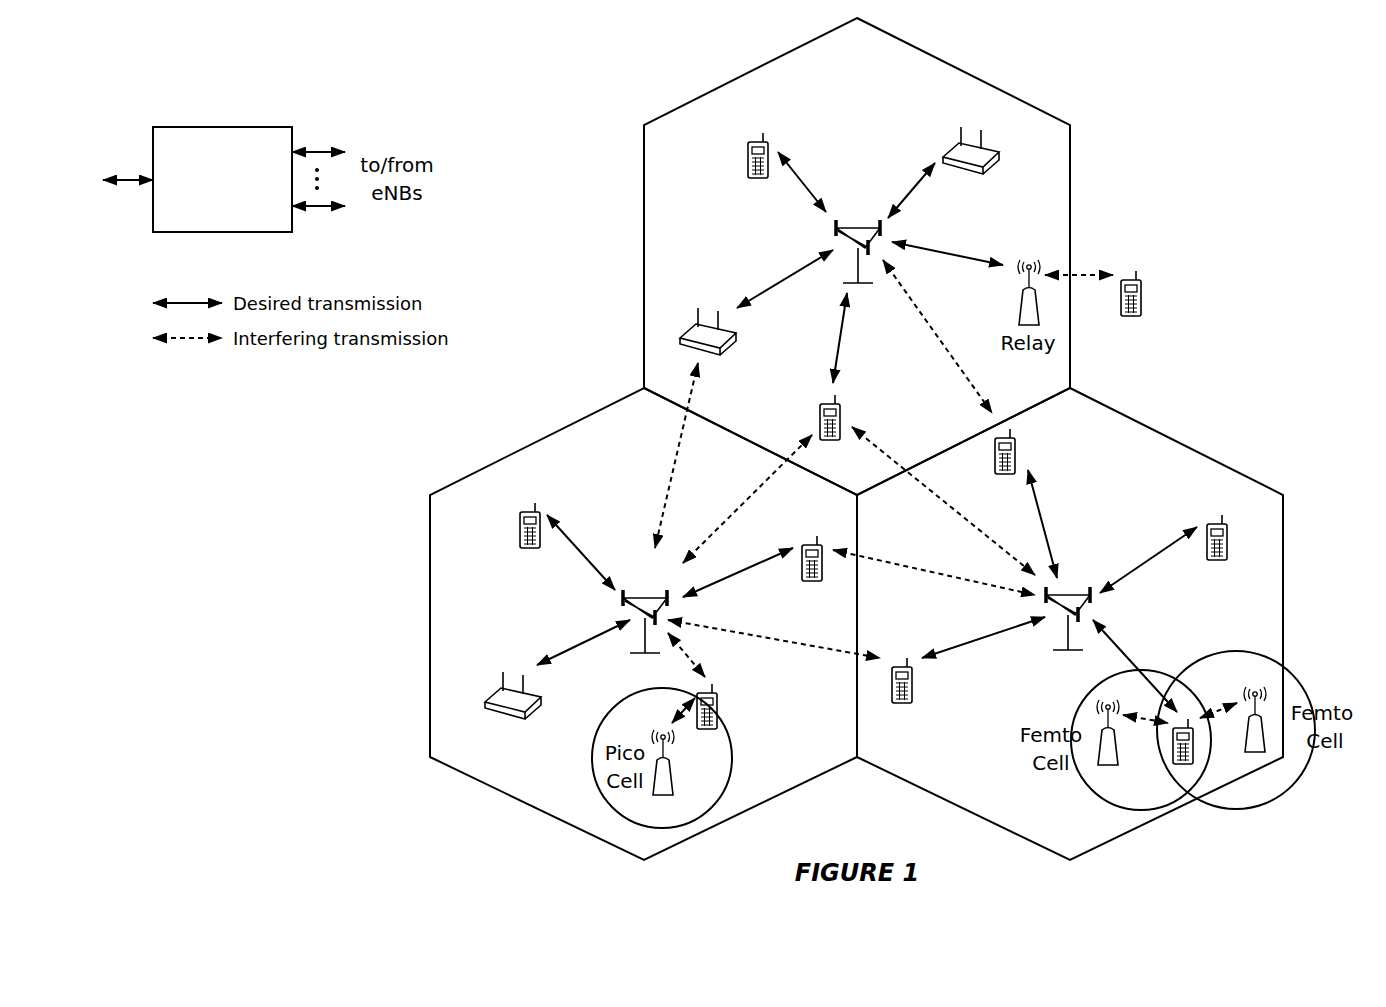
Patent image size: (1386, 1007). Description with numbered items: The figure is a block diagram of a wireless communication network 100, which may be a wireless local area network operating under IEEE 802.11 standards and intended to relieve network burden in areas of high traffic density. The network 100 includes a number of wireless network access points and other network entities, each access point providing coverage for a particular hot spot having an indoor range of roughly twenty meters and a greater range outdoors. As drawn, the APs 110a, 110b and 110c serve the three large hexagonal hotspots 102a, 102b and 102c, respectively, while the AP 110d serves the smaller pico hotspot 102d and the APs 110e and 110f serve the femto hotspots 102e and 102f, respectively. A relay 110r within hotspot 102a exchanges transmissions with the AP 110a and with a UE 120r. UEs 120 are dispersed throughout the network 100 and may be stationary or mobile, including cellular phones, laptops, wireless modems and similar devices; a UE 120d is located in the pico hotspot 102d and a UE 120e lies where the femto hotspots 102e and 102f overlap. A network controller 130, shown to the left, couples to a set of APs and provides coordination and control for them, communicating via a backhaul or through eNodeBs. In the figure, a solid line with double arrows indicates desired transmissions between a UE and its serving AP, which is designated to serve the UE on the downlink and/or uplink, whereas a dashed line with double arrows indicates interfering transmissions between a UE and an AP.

The wireless communication network 100 is at (1215, 85).
The hotspot 102a is at (962, 68).
The hotspot 102b is at (559, 432).
The hotspot 102c is at (1163, 436).
The hotspot 102d is at (614, 705).
The hotspot 102e is at (1077, 703).
The hotspot 102f is at (1234, 650).
The AP 110a is at (861, 226).
The AP 110b is at (650, 594).
The AP 110c is at (1066, 592).
The AP 110d is at (672, 783).
The AP 110e is at (1118, 755).
The AP 110f is at (1264, 742).
The relay 110r is at (1017, 307).
The UE 120 is at (747, 152).
The UE 120d is at (719, 705).
The UE 120e is at (1173, 762).
The UE 120r is at (1141, 310).
The network controller 130 is at (218, 127).